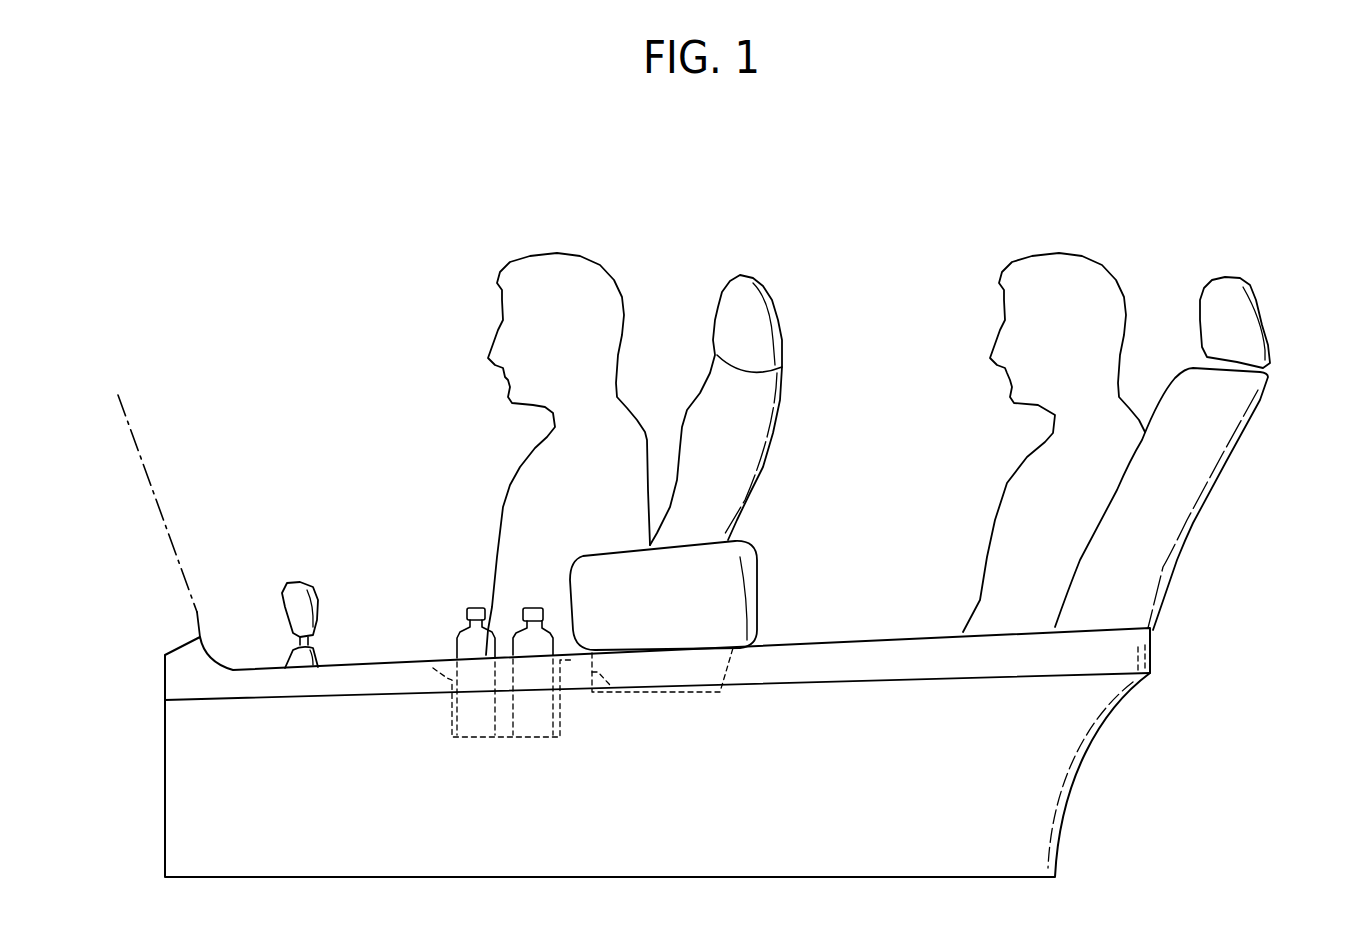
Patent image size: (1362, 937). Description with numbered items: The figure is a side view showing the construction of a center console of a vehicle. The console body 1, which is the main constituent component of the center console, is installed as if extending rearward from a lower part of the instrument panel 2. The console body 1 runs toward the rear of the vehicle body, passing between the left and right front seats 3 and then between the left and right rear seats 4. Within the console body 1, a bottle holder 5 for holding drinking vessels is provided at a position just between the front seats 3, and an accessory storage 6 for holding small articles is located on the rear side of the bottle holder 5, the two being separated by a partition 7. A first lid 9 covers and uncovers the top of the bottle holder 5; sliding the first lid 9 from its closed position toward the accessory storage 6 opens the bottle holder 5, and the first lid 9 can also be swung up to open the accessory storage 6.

The console body 1 is at (827, 639).
The instrument panel 2 is at (160, 488).
The front seats 3 is at (778, 433).
The rear seats 4 is at (1247, 435).
The bottle holder 5 is at (503, 738).
The accessory storage 6 is at (682, 693).
The partition 7 is at (613, 694).
The first lid 9 is at (737, 557).